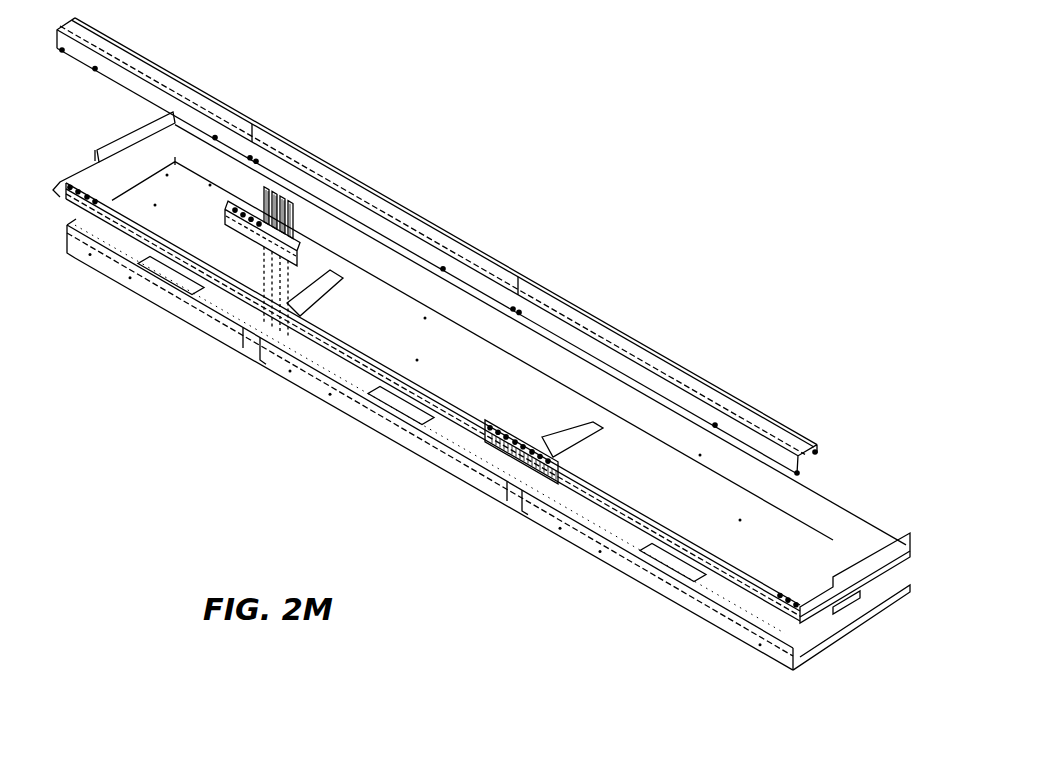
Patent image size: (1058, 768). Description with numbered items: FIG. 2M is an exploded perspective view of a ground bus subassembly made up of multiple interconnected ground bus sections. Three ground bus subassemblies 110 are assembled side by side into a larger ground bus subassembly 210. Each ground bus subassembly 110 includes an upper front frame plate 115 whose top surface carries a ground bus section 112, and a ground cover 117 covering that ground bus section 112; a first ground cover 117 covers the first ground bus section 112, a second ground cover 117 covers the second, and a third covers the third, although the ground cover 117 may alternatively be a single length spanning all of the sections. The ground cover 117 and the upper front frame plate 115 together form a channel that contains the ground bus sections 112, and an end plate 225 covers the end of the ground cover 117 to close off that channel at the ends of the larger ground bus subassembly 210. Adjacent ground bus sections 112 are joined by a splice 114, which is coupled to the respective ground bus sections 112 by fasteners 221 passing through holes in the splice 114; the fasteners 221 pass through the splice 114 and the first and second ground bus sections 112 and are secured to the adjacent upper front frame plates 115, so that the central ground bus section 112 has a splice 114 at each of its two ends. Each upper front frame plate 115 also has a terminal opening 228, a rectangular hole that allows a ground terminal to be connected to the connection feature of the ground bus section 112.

The larger ground bus subassembly 210 is at (487, 178).
The ground cover 117 is at (152, 62).
The ground bus subassembly 110 is at (112, 140).
The ground bus section 112 is at (218, 288).
The upper front frame plate 115 is at (93, 266).
The terminal opening 228 is at (175, 283).
The splice 114 is at (238, 197).
The fasteners 221 is at (283, 190).
The end plate 225 is at (897, 537).